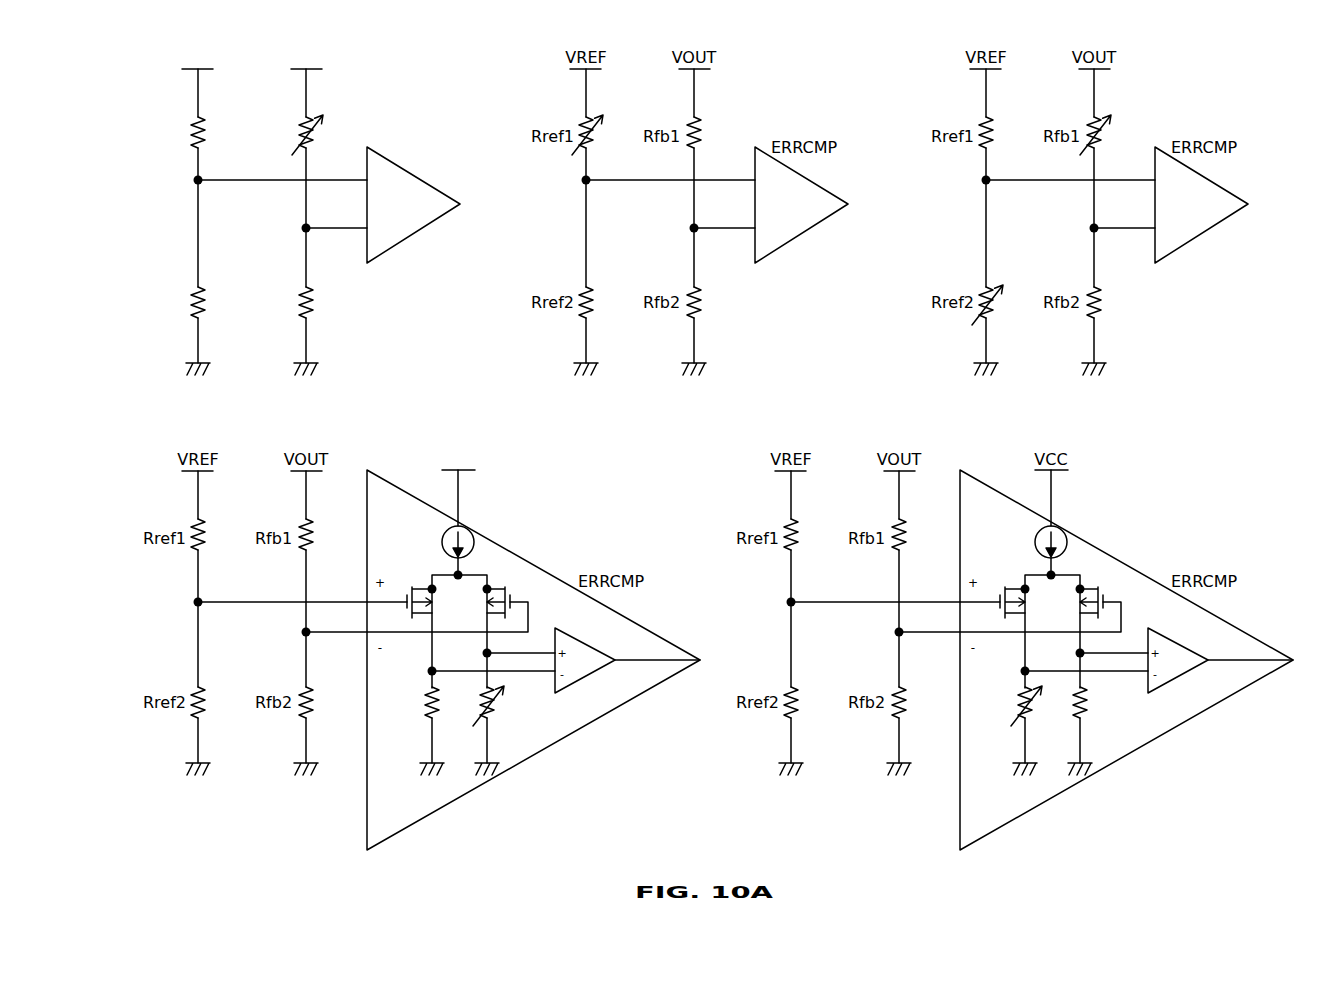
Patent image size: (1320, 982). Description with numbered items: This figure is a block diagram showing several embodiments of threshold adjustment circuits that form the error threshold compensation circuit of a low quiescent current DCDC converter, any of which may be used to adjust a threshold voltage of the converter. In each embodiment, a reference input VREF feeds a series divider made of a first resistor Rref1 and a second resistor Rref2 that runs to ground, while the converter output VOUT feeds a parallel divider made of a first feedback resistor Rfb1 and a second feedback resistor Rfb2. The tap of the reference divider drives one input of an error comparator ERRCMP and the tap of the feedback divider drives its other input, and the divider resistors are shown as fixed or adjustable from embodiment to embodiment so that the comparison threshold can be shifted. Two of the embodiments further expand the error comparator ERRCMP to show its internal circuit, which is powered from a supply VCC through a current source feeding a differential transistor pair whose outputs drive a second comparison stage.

The reference voltage input terminal VREF is at (197, 58).
The output voltage feedback terminal VOUT is at (306, 58).
The supply voltage terminal VCC is at (458, 460).
The first reference divider resistor Rref1 is at (174, 132).
The second reference divider resistor Rref2 is at (174, 302).
The first feedback divider resistor Rfb1 is at (289, 135).
The second feedback divider resistor Rfb2 is at (284, 302).
The error comparator ERRCMP is at (413, 200).